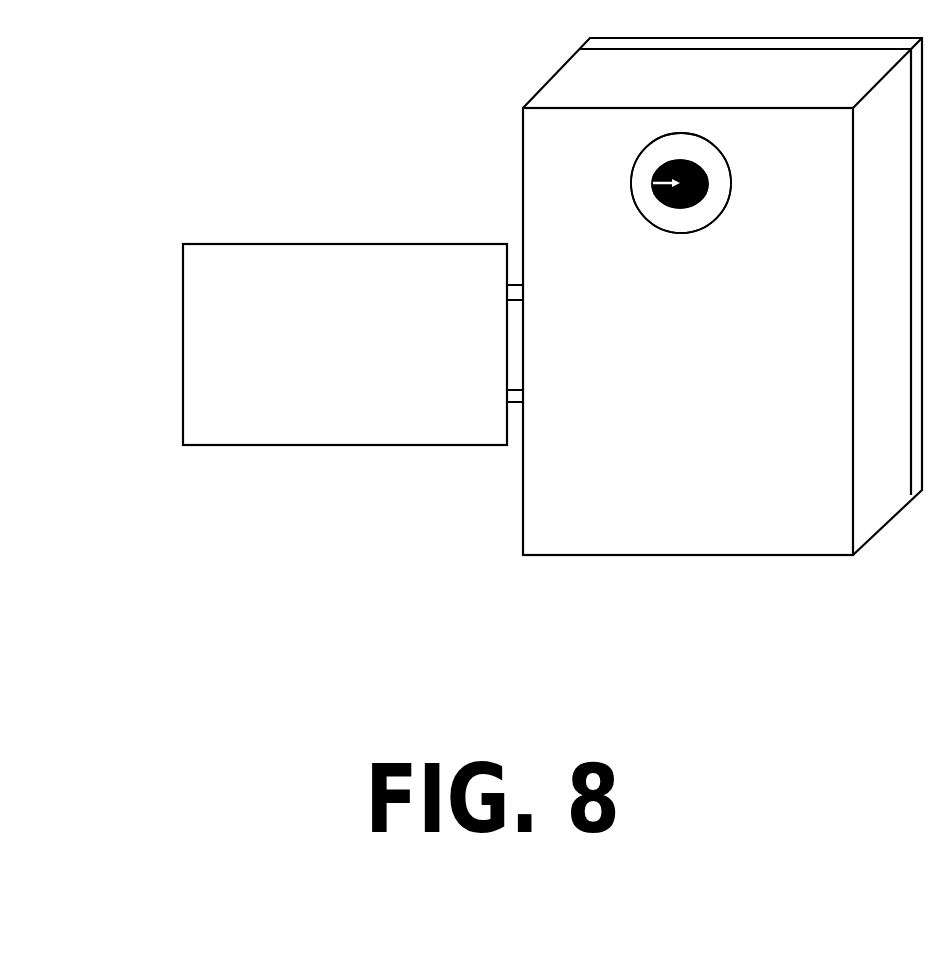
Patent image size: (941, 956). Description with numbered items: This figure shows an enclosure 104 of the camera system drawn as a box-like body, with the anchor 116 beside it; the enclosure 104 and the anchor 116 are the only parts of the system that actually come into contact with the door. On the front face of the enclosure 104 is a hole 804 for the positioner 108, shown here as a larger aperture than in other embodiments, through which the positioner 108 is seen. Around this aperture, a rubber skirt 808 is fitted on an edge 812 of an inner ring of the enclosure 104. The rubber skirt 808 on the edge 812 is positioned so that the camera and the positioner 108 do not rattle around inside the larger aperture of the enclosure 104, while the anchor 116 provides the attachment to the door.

The enclosure 104 is at (490, 525).
The anchor 116 is at (353, 344).
The hole for the positioner 804 is at (654, 183).
The positioner 108 is at (455, 176).
The rubber skirt 808 is at (705, 157).
The edge 812 is at (730, 218).